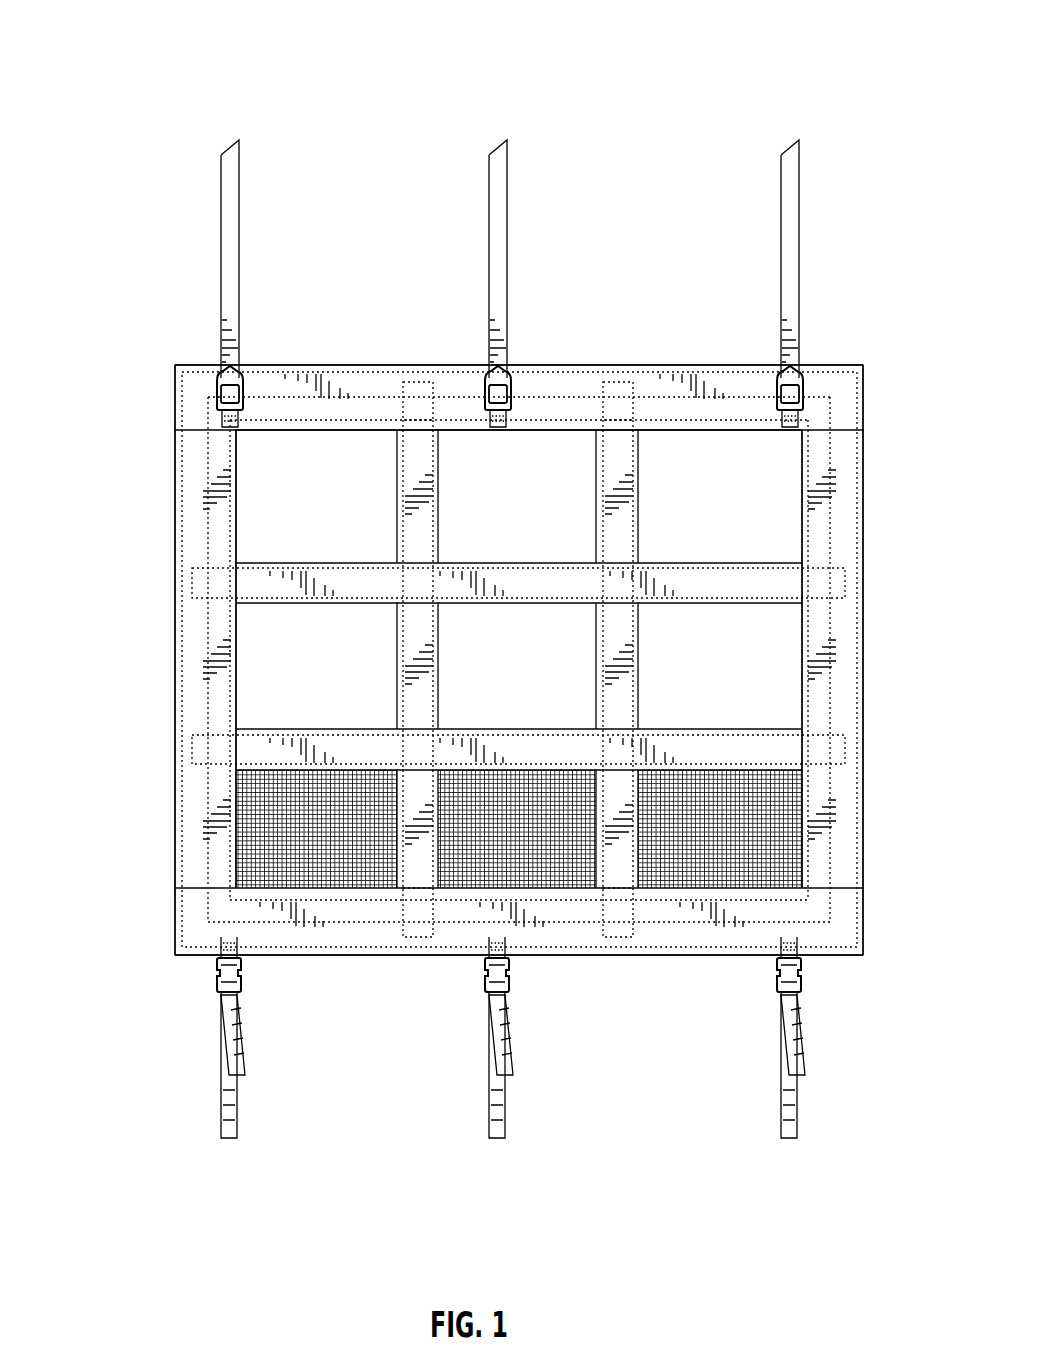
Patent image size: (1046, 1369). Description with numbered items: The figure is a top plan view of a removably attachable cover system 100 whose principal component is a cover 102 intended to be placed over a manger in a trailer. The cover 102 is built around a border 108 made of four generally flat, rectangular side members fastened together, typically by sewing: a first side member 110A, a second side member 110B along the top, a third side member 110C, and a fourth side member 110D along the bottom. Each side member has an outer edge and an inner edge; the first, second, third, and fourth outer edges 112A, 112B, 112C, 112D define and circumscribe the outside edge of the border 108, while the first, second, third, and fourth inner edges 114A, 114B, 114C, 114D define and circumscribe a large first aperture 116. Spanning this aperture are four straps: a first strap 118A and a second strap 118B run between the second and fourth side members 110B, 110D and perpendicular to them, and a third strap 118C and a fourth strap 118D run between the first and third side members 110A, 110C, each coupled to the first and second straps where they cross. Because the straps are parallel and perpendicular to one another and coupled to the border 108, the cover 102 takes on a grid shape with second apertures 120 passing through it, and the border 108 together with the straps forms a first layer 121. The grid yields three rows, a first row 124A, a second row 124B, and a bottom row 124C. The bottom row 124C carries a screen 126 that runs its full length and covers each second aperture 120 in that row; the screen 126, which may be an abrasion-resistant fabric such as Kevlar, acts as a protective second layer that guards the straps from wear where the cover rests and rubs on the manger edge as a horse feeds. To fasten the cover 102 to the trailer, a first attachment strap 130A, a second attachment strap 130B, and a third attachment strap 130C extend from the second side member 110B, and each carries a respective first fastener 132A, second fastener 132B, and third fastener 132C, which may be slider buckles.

The removably attachable cover system 100 is at (247, 36).
The cover 102 is at (197, 368).
The border 108 is at (197, 608).
The first side member 110A is at (197, 493).
The second side member 110B is at (310, 397).
The third side member 110C is at (857, 682).
The fourth side member 110D is at (448, 925).
The first outer edge 112A is at (173, 430).
The second outer edge 112B is at (602, 366).
The third outer edge 112C is at (866, 638).
The fourth outer edge 112D is at (353, 955).
The first inner edge 114A is at (228, 533).
The second inner edge 114B is at (657, 429).
The third inner edge 114C is at (803, 559).
The fourth inner edge 114D is at (338, 888).
The first aperture 116 is at (778, 507).
The first strap 118A is at (422, 862).
The second strap 118B is at (614, 870).
The third strap 118C is at (678, 578).
The fourth strap 118D is at (760, 748).
The second apertures 120 is at (773, 550).
The first layer 121 is at (380, 372).
The first row 124A is at (227, 440).
The second row 124B is at (228, 705).
The bottom row 124C is at (228, 867).
The screen 126 is at (780, 862).
The first attachment strap 130A is at (232, 200).
The second attachment strap 130B is at (500, 200).
The third attachment strap 130C is at (790, 200).
The first fastener 132A is at (236, 381).
The second fastener 132B is at (503, 381).
The third fastener 132C is at (795, 381).